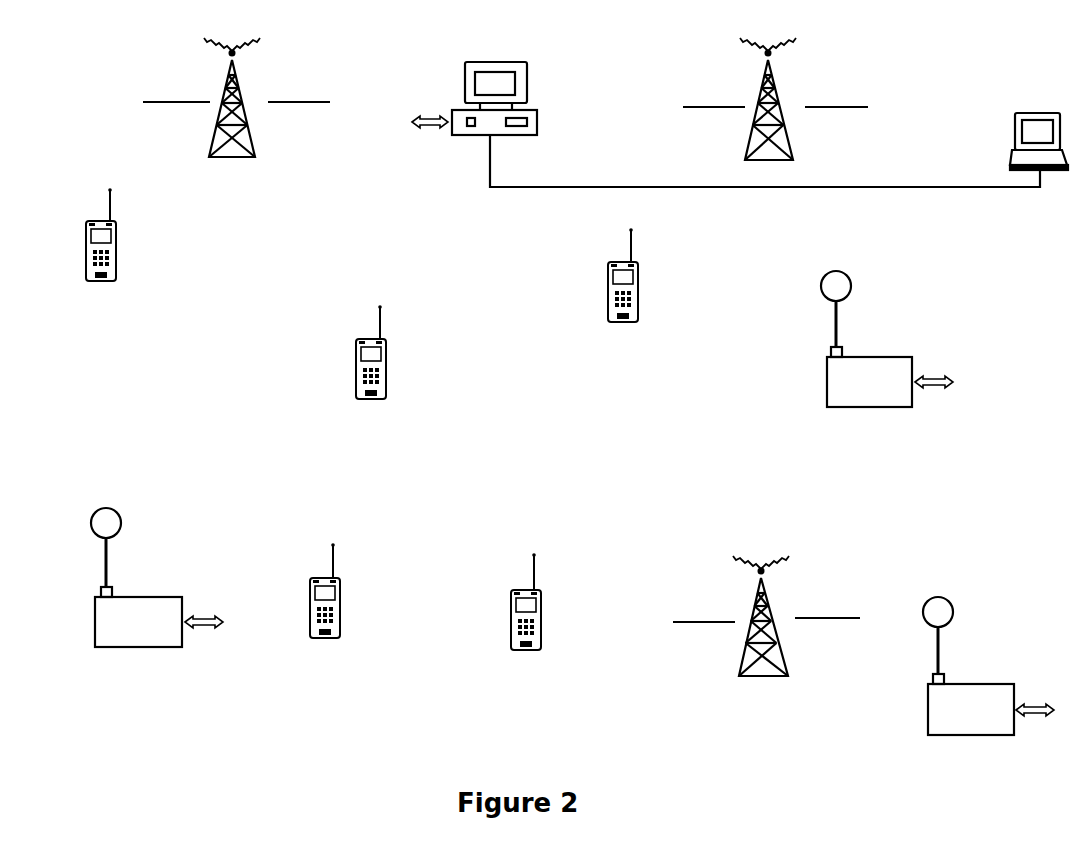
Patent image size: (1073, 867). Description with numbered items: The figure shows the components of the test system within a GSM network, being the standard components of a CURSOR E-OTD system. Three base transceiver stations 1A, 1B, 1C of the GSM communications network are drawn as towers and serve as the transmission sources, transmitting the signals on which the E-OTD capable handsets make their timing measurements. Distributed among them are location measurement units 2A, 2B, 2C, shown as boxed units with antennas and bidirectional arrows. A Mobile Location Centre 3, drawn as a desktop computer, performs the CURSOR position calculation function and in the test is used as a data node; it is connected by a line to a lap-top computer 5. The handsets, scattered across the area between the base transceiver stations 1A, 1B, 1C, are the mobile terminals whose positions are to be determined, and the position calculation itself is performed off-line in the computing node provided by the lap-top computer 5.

The base transceiver station 1A is at (260, 80).
The base transceiver station 1B is at (785, 90).
The base transceiver station 1C is at (775, 602).
The location measurement unit 2A is at (122, 612).
The location measurement unit 2B is at (858, 372).
The location measurement unit 2C is at (960, 700).
The Mobile Location Centre 3 is at (527, 111).
The lap-top computer 5 is at (1036, 120).